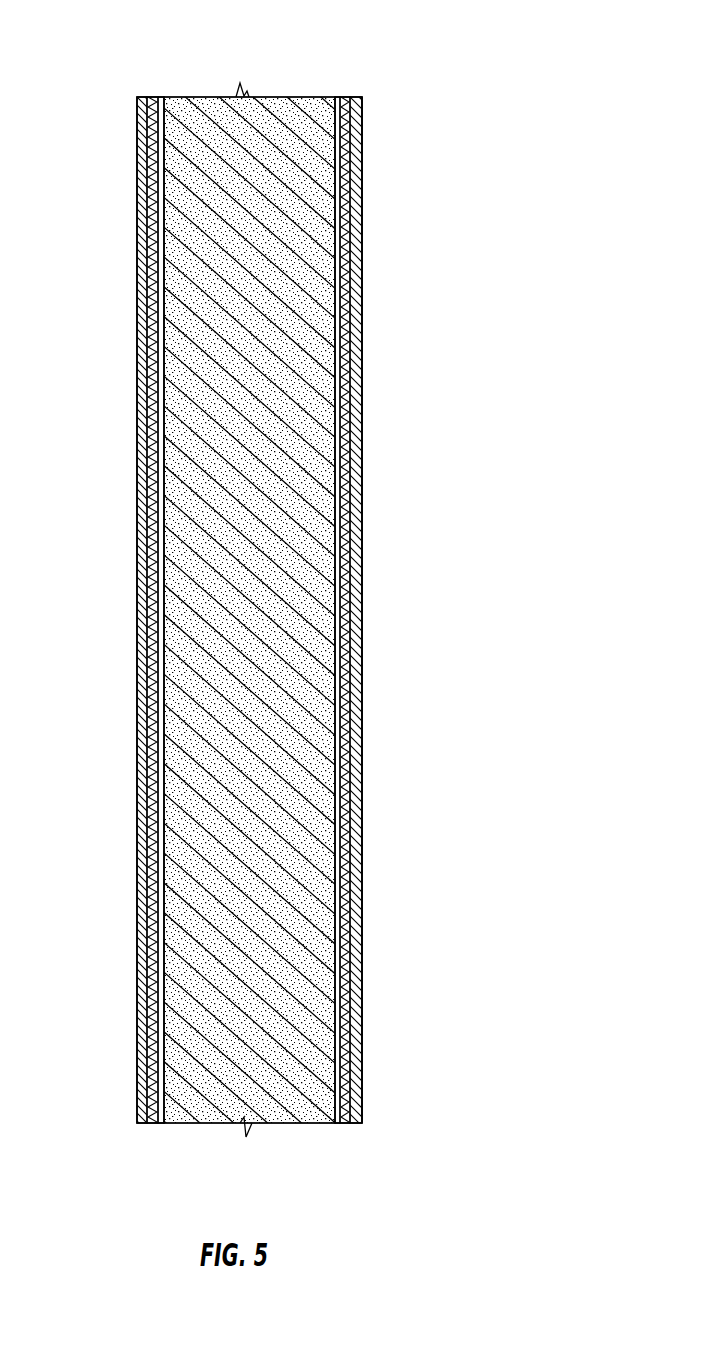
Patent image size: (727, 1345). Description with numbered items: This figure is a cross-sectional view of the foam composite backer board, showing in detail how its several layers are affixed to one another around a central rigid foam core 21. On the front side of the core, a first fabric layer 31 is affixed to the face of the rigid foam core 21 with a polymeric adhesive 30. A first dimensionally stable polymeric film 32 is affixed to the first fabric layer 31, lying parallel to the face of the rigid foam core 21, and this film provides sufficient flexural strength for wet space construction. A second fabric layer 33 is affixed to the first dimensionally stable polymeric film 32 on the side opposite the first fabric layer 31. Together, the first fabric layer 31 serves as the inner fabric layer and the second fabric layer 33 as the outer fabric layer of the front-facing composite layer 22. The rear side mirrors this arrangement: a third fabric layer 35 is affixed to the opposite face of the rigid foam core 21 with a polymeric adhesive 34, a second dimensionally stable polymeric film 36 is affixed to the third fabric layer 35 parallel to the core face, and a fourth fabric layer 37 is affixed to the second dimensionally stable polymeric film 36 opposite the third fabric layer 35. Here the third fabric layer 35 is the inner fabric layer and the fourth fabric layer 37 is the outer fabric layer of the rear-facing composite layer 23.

The rigid foam core 21 is at (200, 132).
The front-facing composite layer 22 is at (137, 498).
The rear-facing composite layer 23 is at (363, 777).
The polymeric adhesive 30 is at (162, 1125).
The first fabric layer 31 is at (160, 1124).
The first dimensionally stable polymeric film 32 is at (148, 1073).
The second fabric layer 33 is at (140, 1012).
The polymeric adhesive 34 is at (338, 97).
The third fabric layer 35 is at (347, 97).
The second dimensionally stable polymeric film 36 is at (358, 143).
The fourth fabric layer 37 is at (360, 218).